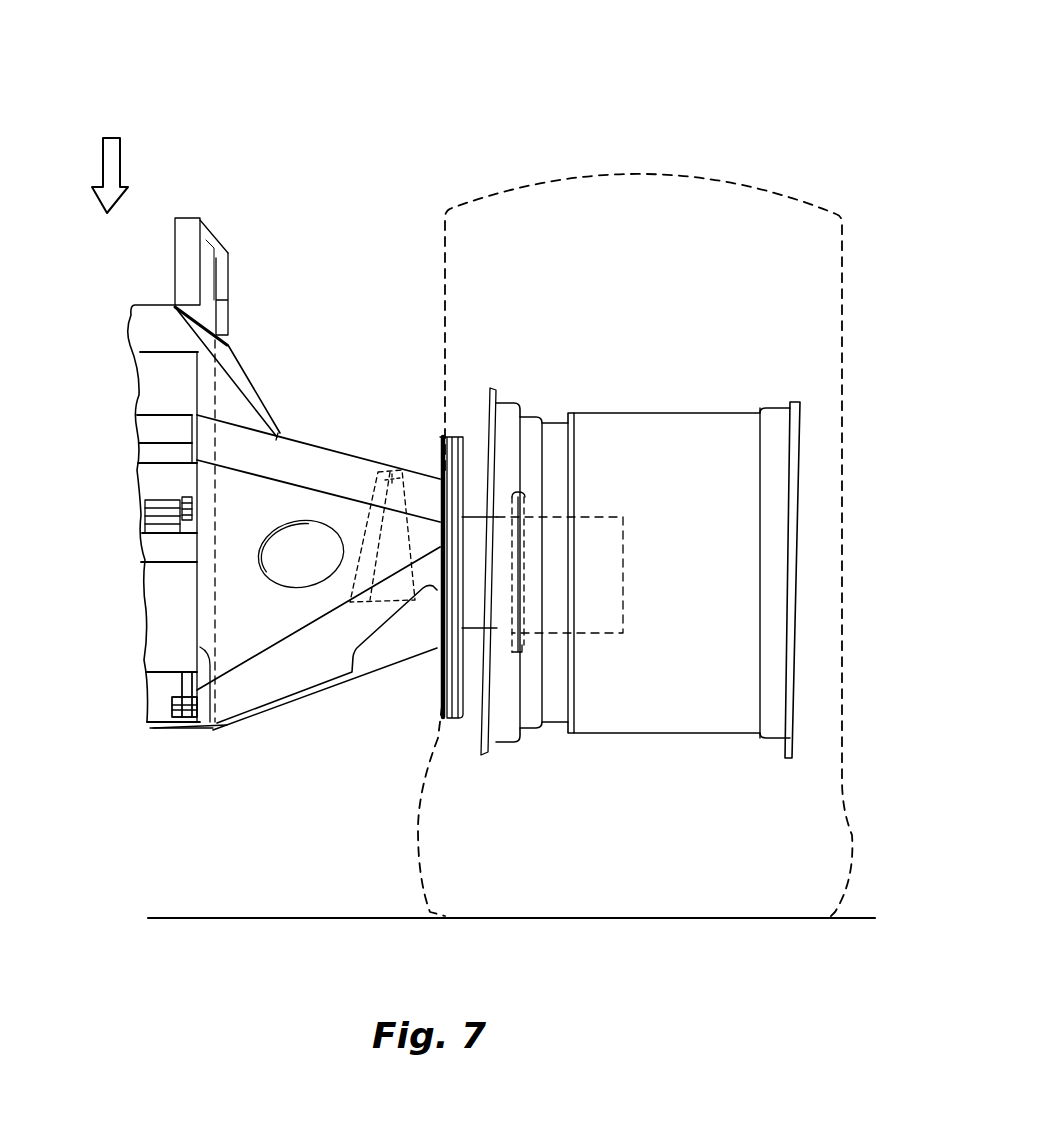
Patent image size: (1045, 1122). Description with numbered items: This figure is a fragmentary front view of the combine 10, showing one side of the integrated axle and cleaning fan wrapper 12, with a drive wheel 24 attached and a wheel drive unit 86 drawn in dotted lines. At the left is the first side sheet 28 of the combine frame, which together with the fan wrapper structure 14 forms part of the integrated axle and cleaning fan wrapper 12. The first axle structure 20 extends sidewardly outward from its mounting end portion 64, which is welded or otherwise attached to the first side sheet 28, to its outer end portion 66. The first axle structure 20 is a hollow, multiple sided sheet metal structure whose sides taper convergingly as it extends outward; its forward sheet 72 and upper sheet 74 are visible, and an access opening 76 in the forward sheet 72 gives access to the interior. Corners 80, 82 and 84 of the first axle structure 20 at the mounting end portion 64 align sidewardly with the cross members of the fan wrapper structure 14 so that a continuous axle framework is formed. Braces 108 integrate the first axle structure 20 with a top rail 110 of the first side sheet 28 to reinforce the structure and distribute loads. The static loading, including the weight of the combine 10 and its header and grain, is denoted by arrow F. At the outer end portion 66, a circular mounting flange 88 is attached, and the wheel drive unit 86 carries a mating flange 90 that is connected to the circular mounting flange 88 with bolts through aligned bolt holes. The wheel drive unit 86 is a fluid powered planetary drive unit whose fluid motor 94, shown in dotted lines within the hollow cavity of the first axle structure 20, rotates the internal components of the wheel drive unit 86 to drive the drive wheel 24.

The combine 10 is at (373, 137).
The arrows F is at (120, 158).
The integrated axle and cleaning fan wrapper 12 is at (222, 737).
The fan wrapper structure 14 is at (140, 633).
The first axle structure 20 is at (267, 713).
The drive wheel 24 is at (845, 873).
The first side sheet 28 is at (197, 215).
The mounting end portion 64 is at (207, 730).
The outer end portion 66 is at (440, 478).
The forward sheet 72 is at (322, 675).
The upper sheet 74 is at (335, 450).
The access openings 76 is at (292, 562).
The corners 80 is at (195, 730).
The corners 82 is at (184, 695).
The corners 84 is at (208, 400).
The wheel drive unit 86 is at (600, 514).
The circular mounting flange 88 is at (440, 690).
The mating flange 90 is at (462, 420).
The fluid motor 94 is at (365, 522).
The braces 108 is at (257, 395).
The top rail 110 is at (230, 270).